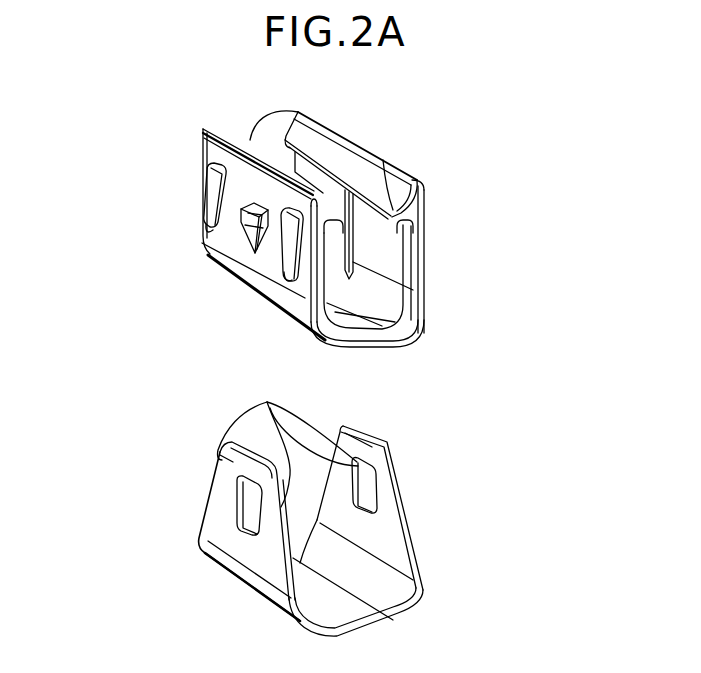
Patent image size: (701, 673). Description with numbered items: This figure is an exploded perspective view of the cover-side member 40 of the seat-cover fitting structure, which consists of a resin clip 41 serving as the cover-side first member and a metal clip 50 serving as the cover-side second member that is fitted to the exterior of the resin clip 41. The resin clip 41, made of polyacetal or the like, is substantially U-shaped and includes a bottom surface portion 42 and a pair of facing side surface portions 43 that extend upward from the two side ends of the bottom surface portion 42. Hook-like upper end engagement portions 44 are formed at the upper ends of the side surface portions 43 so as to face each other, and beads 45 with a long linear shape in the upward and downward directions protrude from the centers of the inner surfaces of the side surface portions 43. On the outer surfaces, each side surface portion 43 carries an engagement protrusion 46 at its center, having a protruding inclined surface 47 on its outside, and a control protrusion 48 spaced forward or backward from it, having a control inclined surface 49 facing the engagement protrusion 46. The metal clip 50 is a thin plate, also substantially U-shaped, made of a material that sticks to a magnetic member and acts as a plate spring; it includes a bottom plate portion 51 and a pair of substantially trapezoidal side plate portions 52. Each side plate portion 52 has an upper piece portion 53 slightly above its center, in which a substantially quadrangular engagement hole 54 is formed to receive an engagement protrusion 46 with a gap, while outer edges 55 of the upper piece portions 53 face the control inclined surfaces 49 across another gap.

The cover-side member 40 is at (128, 141).
The resin clip 41 is at (254, 106).
The bottom surface portion 42 is at (363, 346).
The side surface portions 43 is at (425, 240).
The upper end engagement portions 44 is at (328, 145).
The beads 45 is at (350, 232).
The engagement protrusions 46 is at (236, 228).
The protruding inclined surface 47 is at (250, 234).
The control protrusions 48 is at (207, 183).
The control inclined surface 49 is at (226, 223).
The metal clip 50 is at (128, 439).
The bottom plate portion 51 is at (367, 632).
The side plate portions 52 is at (386, 513).
The upper piece portion 53 is at (365, 451).
The engagement hole 54 is at (246, 498).
The outer edges 55 is at (288, 440).